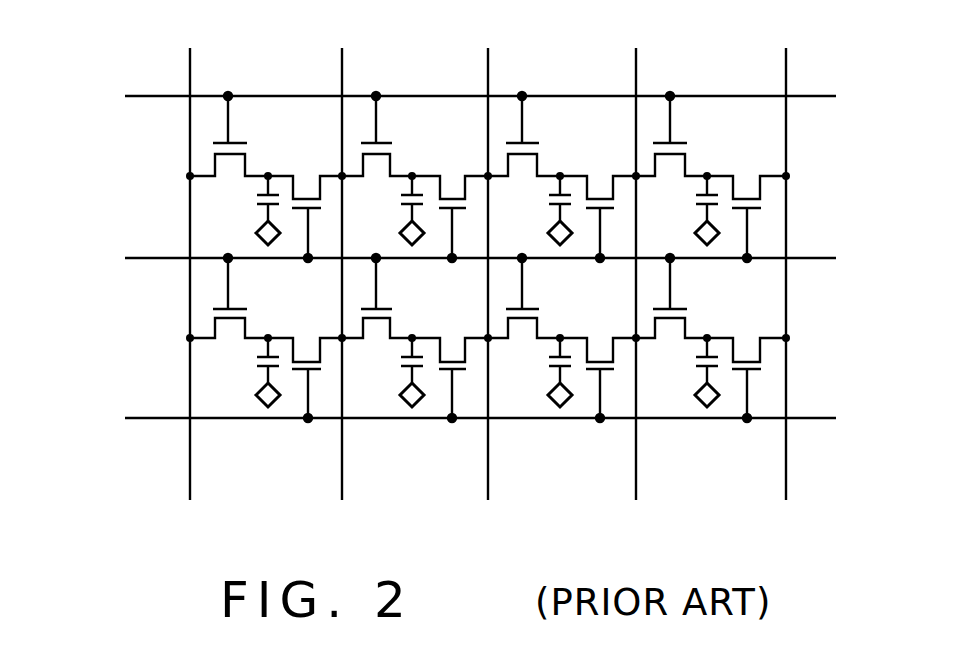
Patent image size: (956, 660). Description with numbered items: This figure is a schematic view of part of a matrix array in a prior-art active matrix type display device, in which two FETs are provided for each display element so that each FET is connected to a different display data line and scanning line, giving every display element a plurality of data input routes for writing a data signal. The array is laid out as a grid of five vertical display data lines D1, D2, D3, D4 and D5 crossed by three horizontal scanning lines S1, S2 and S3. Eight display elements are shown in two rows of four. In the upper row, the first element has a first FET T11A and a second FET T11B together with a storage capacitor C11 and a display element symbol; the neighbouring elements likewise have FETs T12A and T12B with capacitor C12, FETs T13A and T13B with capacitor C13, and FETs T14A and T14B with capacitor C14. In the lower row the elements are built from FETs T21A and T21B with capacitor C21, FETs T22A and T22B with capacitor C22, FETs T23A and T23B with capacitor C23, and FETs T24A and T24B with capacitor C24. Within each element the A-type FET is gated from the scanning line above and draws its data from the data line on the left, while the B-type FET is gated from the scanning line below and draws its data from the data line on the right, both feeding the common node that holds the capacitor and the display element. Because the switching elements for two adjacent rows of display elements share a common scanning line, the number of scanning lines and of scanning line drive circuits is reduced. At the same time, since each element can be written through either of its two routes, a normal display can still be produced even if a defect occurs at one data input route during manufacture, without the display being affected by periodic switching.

The data line D1 is at (189, 257).
The data line D2 is at (341, 257).
The data line D3 is at (487, 257).
The data line D4 is at (635, 257).
The data line D5 is at (785, 257).
The scan line S1 is at (457, 96).
The scan line S2 is at (457, 258).
The scan line S3 is at (457, 419).
The transistor T11A is at (245, 134).
The transistor T11B is at (304, 202).
The capacitor C11 is at (244, 198).
The transistor T12A is at (394, 134).
The transistor T12B is at (450, 202).
The capacitor C12 is at (387, 198).
The transistor T13A is at (541, 134).
The transistor T13B is at (598, 202).
The capacitor C13 is at (535, 198).
The transistor T14A is at (688, 134).
The transistor T14B is at (746, 202).
The capacitor C14 is at (683, 198).
The transistor T21A is at (245, 296).
The transistor T21B is at (302, 363).
The capacitor C21 is at (238, 363).
The transistor T22A is at (394, 296).
The transistor T22B is at (447, 363).
The capacitor C22 is at (385, 363).
The transistor T23A is at (541, 296).
The transistor T23B is at (594, 363).
The capacitor C23 is at (532, 363).
The transistor T24A is at (688, 296).
The transistor T24B is at (742, 363).
The capacitor C24 is at (680, 363).